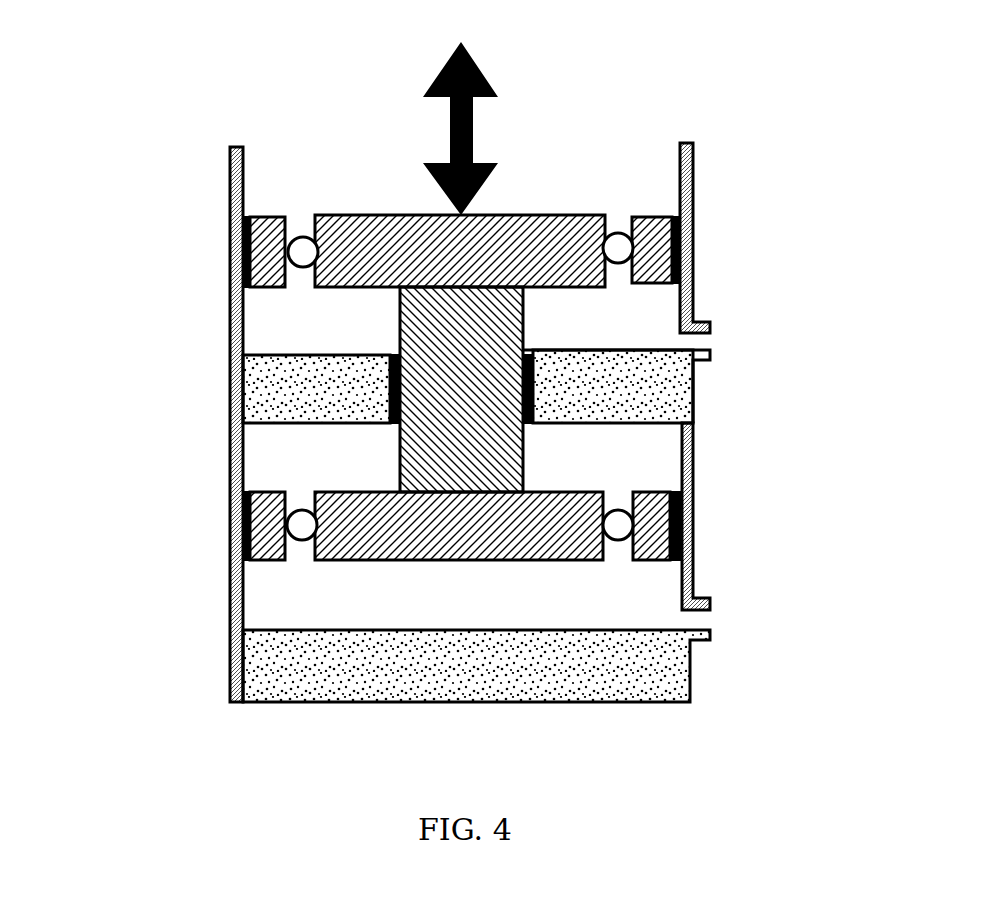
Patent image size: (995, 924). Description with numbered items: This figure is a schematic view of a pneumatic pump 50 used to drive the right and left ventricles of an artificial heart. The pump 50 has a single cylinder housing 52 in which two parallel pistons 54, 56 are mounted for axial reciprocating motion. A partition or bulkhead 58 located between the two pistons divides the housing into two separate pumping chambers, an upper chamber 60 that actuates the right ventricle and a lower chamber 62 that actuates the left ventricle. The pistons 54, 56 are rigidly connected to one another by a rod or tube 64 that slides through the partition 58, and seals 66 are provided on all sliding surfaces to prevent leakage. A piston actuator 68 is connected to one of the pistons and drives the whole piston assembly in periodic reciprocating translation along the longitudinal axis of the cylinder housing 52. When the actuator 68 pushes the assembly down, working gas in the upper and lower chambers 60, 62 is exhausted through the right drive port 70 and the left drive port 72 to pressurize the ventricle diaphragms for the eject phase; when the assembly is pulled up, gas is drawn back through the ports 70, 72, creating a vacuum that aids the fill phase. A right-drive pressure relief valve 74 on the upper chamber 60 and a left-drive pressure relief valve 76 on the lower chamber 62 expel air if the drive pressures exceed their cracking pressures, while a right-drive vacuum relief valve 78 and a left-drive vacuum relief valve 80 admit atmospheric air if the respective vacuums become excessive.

The pneumatic pump 50 is at (722, 135).
The cylinder housing 52 is at (222, 188).
The piston 54 is at (501, 238).
The piston 56 is at (537, 498).
The partition 58 is at (655, 393).
The upper chamber 60 is at (648, 302).
The lower chamber 62 is at (658, 596).
The rod 64 is at (423, 332).
The seals 66 is at (243, 255).
The piston actuator 68 is at (473, 128).
The right drive port 70 is at (708, 342).
The left drive port 72 is at (705, 618).
The right-drive pressure relief valve 74 is at (618, 246).
The left-drive pressure relief valve 76 is at (302, 526).
The right-drive vacuum relief valve 78 is at (305, 250).
The left-drive vacuum relief valve 80 is at (616, 524).